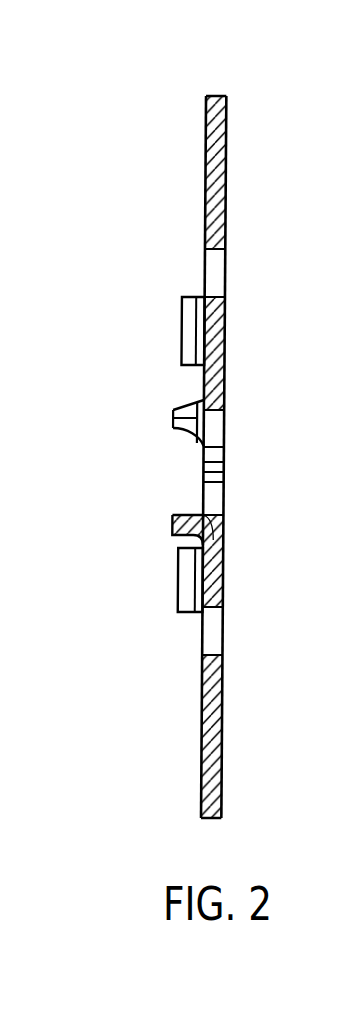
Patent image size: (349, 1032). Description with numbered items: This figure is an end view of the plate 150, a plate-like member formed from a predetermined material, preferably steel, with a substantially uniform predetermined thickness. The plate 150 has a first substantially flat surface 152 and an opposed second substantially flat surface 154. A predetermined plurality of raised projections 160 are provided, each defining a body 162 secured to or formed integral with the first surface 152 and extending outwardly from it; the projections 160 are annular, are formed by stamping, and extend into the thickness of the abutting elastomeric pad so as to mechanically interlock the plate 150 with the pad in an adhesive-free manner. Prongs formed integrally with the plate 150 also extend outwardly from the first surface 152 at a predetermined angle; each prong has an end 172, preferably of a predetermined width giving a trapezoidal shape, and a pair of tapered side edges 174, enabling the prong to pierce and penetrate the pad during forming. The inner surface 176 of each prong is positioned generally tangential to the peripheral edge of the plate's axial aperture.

The plate 150 is at (142, 178).
The first substantially flat surface 152 is at (205, 116).
The second substantially flat surface 154 is at (227, 113).
The raised projection 160 is at (181, 322).
The body 162 is at (204, 297).
The end 172 is at (173, 419).
The tapered side edges 174 is at (196, 406).
The inner surface 176 is at (222, 464).